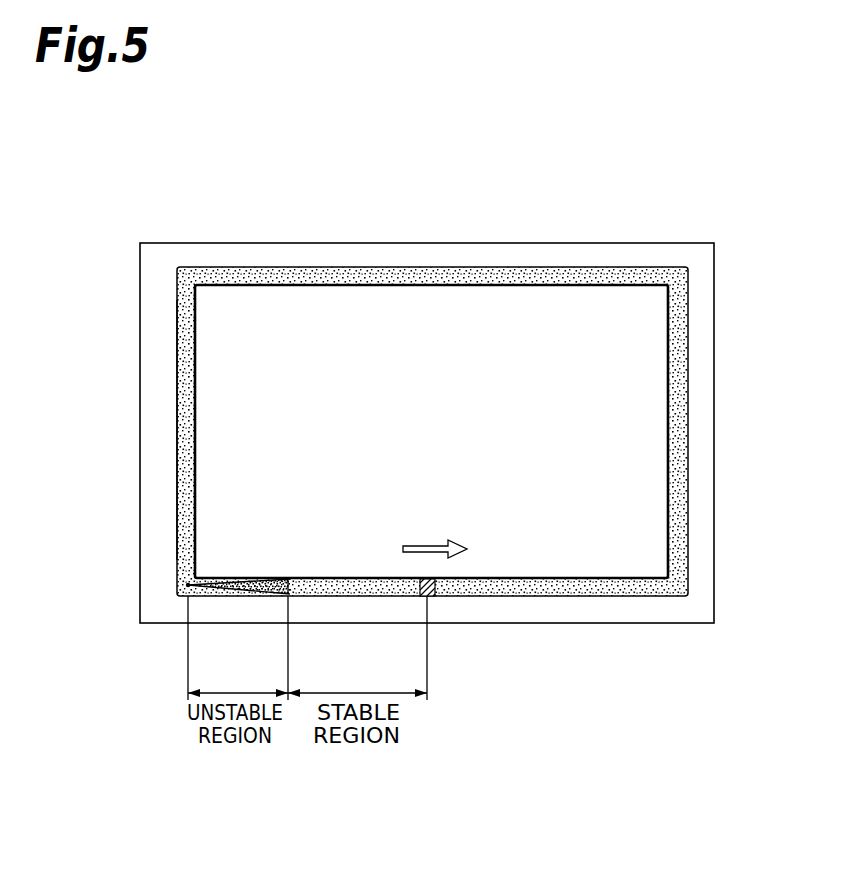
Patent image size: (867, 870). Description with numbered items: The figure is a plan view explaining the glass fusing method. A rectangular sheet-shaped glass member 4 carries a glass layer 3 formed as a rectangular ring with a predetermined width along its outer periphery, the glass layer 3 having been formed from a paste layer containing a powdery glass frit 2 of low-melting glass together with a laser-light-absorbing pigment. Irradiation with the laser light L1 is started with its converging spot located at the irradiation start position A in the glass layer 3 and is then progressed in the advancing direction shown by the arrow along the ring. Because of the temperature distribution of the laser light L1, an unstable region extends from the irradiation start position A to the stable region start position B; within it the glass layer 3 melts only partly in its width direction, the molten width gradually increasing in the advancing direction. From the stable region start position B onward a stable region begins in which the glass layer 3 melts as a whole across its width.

The glass frit 2 is at (383, 267).
The glass layer 3 is at (180, 370).
The glass member 4 is at (715, 402).
The irradiation start position A is at (186, 584).
The stable region start position B is at (285, 578).
The laser light L1 is at (436, 580).